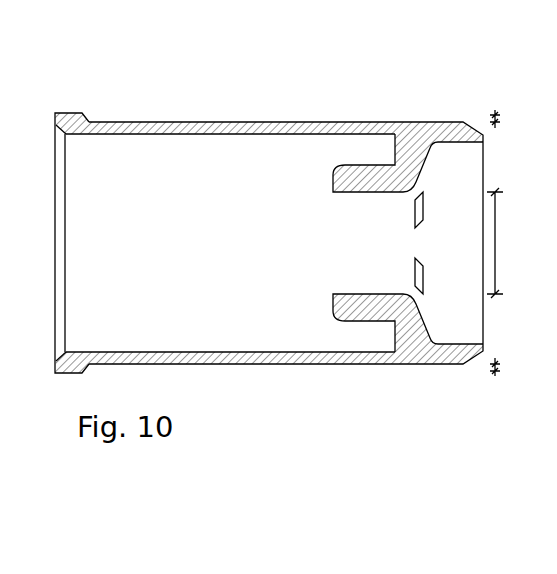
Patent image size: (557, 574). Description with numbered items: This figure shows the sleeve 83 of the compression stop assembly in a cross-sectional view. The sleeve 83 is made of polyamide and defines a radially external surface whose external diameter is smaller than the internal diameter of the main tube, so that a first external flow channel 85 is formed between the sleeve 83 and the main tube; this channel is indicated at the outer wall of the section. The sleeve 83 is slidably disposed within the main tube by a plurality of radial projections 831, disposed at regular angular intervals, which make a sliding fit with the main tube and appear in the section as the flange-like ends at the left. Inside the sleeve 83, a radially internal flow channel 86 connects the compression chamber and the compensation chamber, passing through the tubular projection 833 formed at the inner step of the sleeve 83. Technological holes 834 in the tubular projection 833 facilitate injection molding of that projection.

The sleeve 83 is at (205, 121).
The radial projections 831 is at (65, 117).
The tubular projection 833 is at (373, 164).
The technological holes 834 is at (435, 262).
The first external flow channel 85 is at (511, 245).
The radially internal flow channel 86 is at (509, 243).